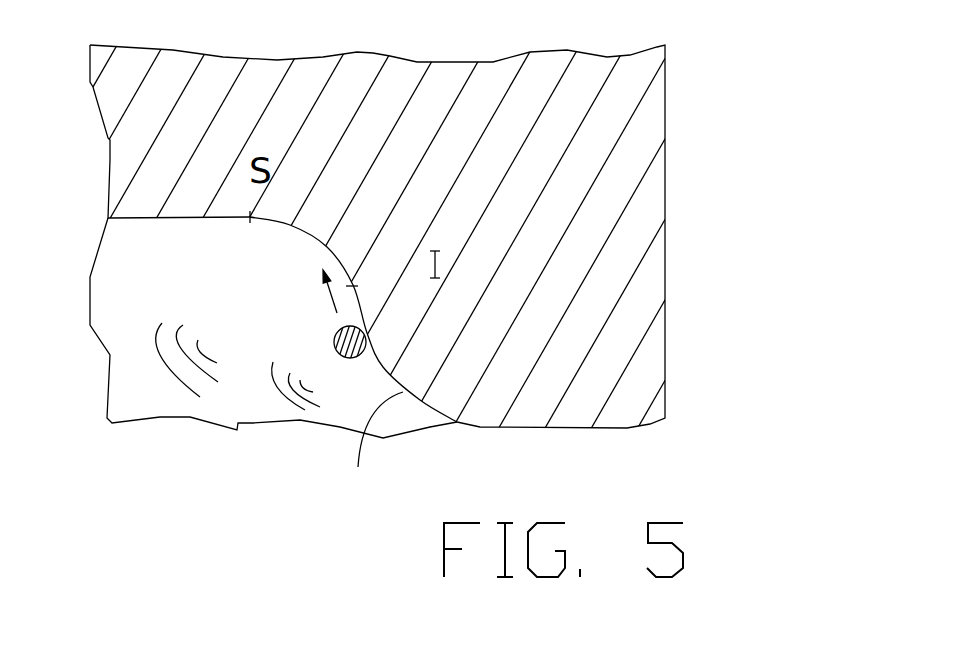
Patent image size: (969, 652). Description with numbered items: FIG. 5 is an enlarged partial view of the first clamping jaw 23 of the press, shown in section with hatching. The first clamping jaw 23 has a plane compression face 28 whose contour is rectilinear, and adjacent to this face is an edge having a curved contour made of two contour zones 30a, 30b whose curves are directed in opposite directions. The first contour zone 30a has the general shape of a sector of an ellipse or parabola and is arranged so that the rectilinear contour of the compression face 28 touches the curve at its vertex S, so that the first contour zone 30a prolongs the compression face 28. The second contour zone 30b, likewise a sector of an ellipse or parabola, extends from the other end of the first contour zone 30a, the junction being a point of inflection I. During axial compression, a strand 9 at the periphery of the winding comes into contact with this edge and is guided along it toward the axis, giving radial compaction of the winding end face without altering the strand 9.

The first clamping jaw 23 is at (628, 183).
The compression face 28 is at (128, 220).
The first contour zone 30a is at (306, 233).
The second contour zone 30b is at (362, 452).
The strand 9 is at (334, 335).